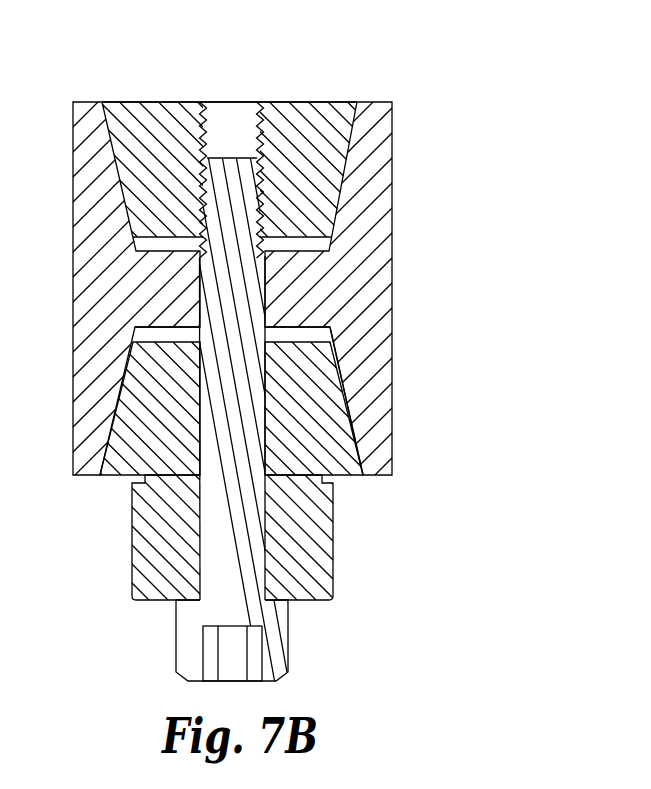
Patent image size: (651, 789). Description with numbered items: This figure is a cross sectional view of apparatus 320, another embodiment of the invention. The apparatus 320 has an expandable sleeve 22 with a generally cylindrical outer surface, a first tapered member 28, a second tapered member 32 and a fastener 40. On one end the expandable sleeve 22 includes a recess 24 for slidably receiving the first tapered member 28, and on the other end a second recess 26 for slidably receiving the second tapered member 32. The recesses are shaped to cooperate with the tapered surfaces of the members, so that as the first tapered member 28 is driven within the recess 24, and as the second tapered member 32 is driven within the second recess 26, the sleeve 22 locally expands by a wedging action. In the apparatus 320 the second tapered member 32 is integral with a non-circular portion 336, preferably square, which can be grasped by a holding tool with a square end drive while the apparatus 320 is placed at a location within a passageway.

The apparatus 320 is at (325, 343).
The first tapered member 28 is at (315, 137).
The recess 24 is at (355, 133).
The expandable sleeve 22 is at (352, 240).
The second recess 26 is at (342, 370).
The second tapered member 32 is at (337, 428).
The non-circular portion 336 is at (318, 543).
The fastener 40 is at (272, 655).